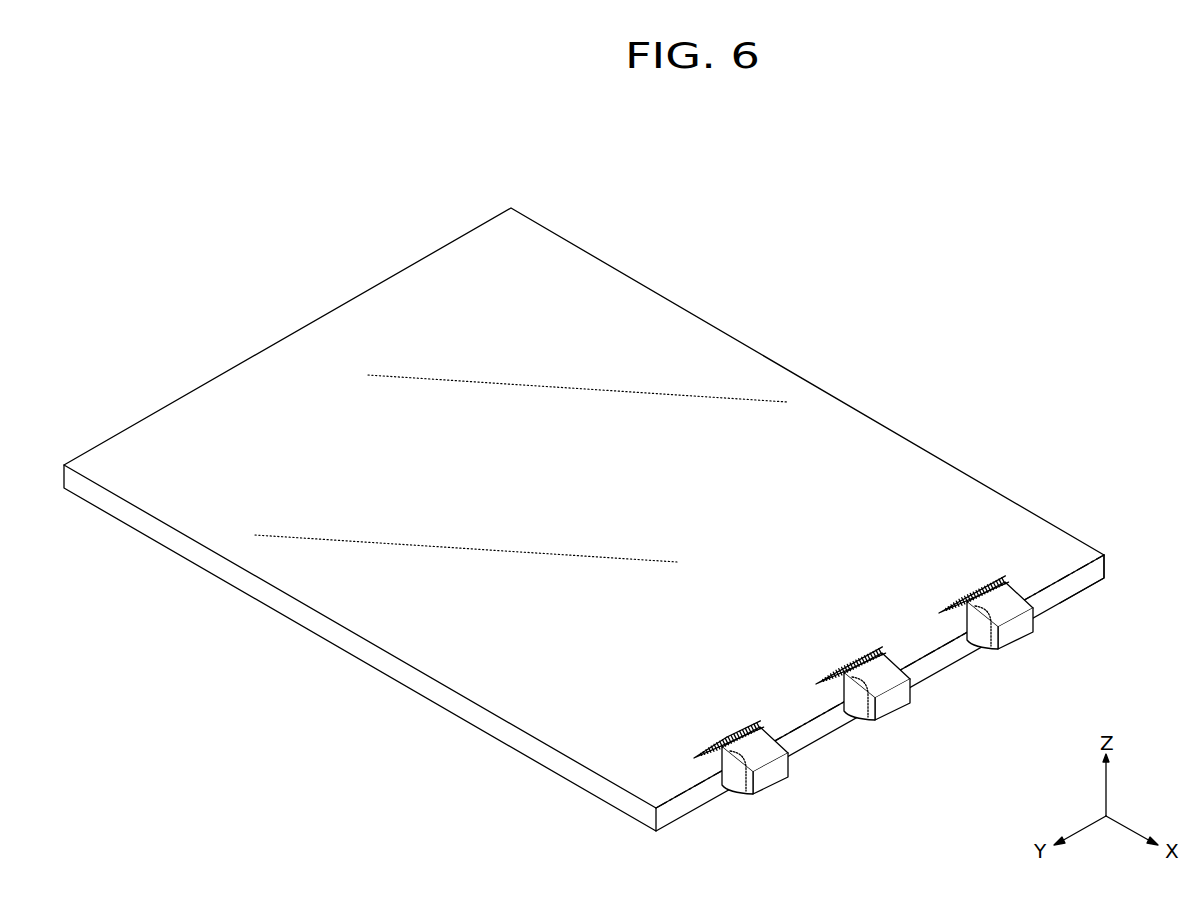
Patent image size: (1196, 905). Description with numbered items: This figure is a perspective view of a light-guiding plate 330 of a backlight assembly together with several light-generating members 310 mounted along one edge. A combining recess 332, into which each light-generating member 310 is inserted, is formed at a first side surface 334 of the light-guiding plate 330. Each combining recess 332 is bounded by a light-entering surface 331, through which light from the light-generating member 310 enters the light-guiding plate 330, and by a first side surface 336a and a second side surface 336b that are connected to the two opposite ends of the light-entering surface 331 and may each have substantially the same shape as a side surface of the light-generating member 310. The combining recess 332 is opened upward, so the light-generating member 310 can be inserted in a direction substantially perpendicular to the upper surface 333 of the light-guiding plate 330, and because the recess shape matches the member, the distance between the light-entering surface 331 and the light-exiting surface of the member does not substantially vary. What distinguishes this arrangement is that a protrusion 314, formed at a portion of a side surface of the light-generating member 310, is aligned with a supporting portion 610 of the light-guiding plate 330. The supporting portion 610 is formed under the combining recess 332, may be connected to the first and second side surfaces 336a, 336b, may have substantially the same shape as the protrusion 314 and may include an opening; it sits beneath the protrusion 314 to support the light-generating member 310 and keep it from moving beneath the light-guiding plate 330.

The light-guiding plate 330 is at (611, 519).
The upper surface 333 is at (980, 498).
The combining recess 332 is at (964, 570).
The first side surface of the light-guiding plate 334 is at (1077, 580).
The light-generating member 310 is at (852, 714).
The supporting portion 610 is at (887, 711).
The protrusion 314 is at (712, 800).
The light-entering surface 331 is at (743, 798).
The first side surface 336a is at (701, 715).
The second side surface 336b is at (753, 709).